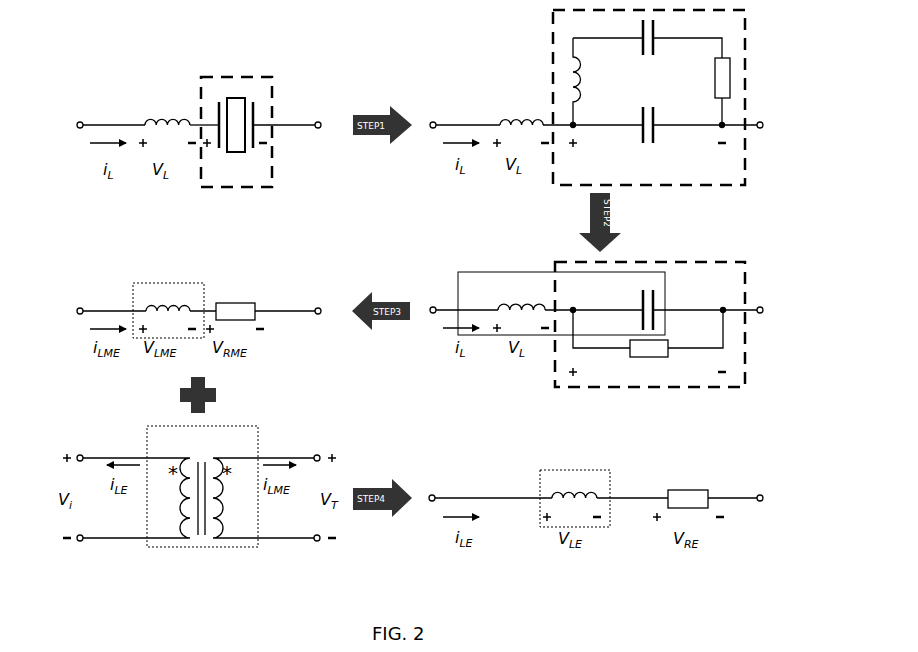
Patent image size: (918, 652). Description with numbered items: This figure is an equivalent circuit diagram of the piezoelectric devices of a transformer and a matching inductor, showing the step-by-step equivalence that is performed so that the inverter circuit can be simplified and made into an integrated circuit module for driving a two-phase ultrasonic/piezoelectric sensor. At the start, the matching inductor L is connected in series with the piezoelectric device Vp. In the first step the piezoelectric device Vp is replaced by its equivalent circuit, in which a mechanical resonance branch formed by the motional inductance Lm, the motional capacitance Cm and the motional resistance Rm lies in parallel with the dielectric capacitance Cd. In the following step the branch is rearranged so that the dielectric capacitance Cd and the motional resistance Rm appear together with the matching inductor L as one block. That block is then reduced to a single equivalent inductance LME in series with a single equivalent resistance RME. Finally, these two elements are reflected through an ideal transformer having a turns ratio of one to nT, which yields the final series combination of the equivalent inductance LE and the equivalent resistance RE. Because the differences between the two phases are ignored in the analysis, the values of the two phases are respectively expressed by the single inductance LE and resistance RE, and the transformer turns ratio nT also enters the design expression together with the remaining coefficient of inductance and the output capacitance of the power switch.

The matching inductor L is at (345, 201).
The piezoelectric device Vp is at (428, 230).
The motional inductance Lm is at (589, 81).
The motional capacitance Cm is at (630, 43).
The dielectric capacitance Cd is at (632, 212).
The motional resistance Rm is at (680, 207).
The equivalent inductance LME is at (168, 307).
The equivalent resistance RME is at (235, 298).
The transformer turns ratio nT is at (198, 486).
The equivalent inductance reflected through transformer LE is at (575, 495).
The equivalent resistance reflected through transformer RE is at (688, 485).